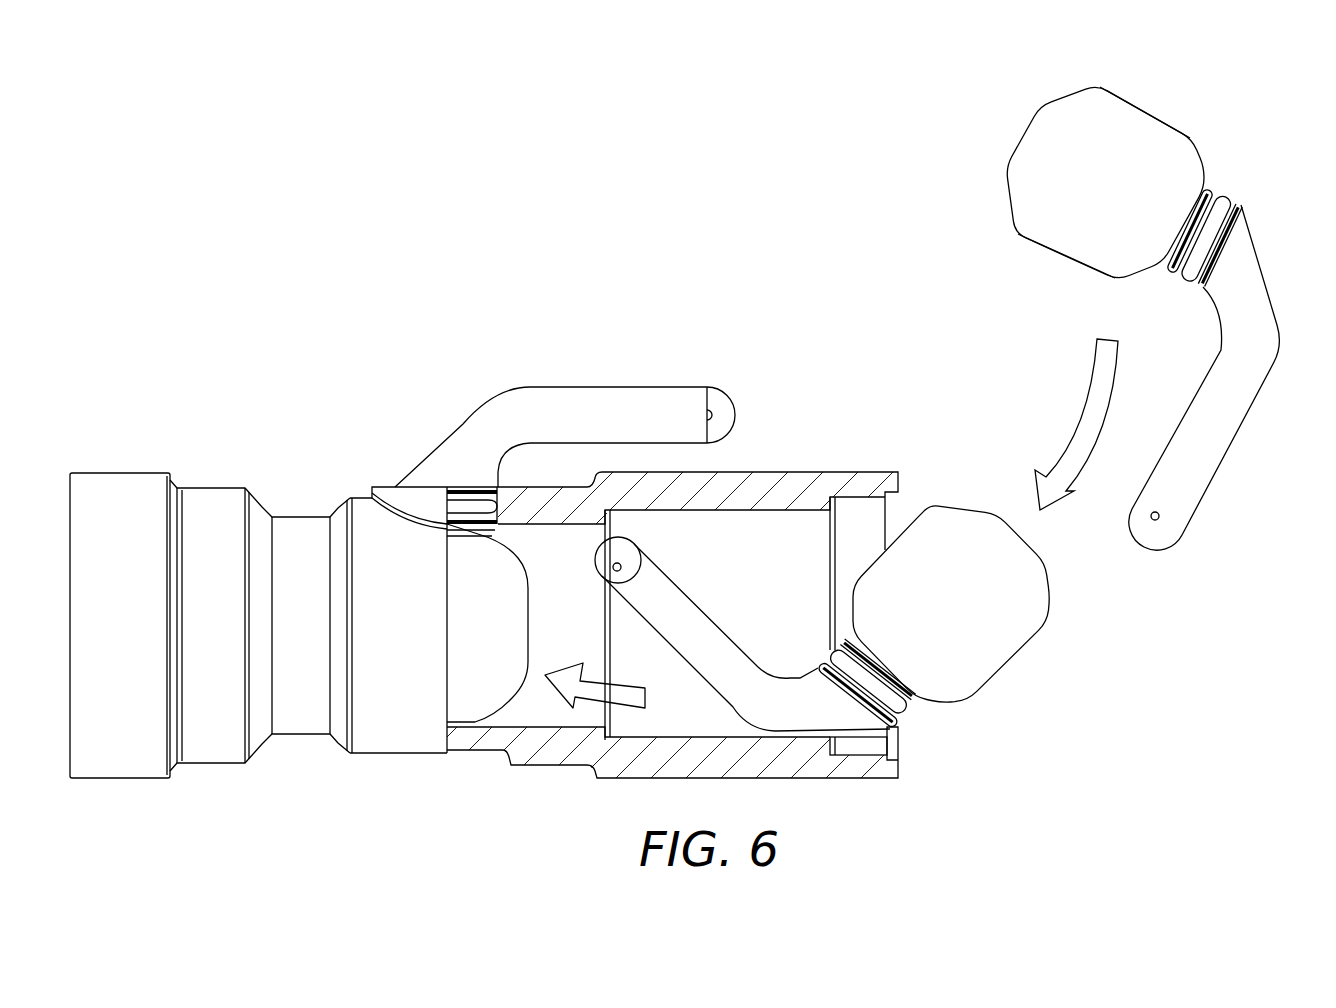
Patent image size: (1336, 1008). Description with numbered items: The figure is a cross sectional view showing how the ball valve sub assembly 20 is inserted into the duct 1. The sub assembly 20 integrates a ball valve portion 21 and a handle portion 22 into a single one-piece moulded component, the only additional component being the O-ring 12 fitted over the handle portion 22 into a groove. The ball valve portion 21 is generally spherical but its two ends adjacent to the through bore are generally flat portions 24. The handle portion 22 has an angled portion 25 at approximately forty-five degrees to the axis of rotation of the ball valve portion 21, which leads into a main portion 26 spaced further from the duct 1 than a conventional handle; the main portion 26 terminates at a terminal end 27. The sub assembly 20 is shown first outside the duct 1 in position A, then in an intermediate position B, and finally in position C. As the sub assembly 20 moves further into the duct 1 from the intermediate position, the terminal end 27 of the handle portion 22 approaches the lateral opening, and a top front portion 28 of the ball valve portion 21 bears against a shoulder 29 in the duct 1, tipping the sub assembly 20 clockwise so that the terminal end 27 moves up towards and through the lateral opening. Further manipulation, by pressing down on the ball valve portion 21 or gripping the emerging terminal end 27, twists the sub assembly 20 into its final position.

The duct 1 is at (776, 478).
The O-ring 12 is at (1232, 200).
The sub assembly 20 is at (908, 577).
The ball valve portion 21 is at (825, 404).
The handle portion 22 is at (578, 390).
The flat portions 24 is at (1143, 108).
The angled portion 25 is at (473, 428).
The main portion 26 is at (685, 395).
The terminal end 27 is at (634, 541).
The top front portion 28 is at (918, 512).
The shoulder 29 is at (844, 497).